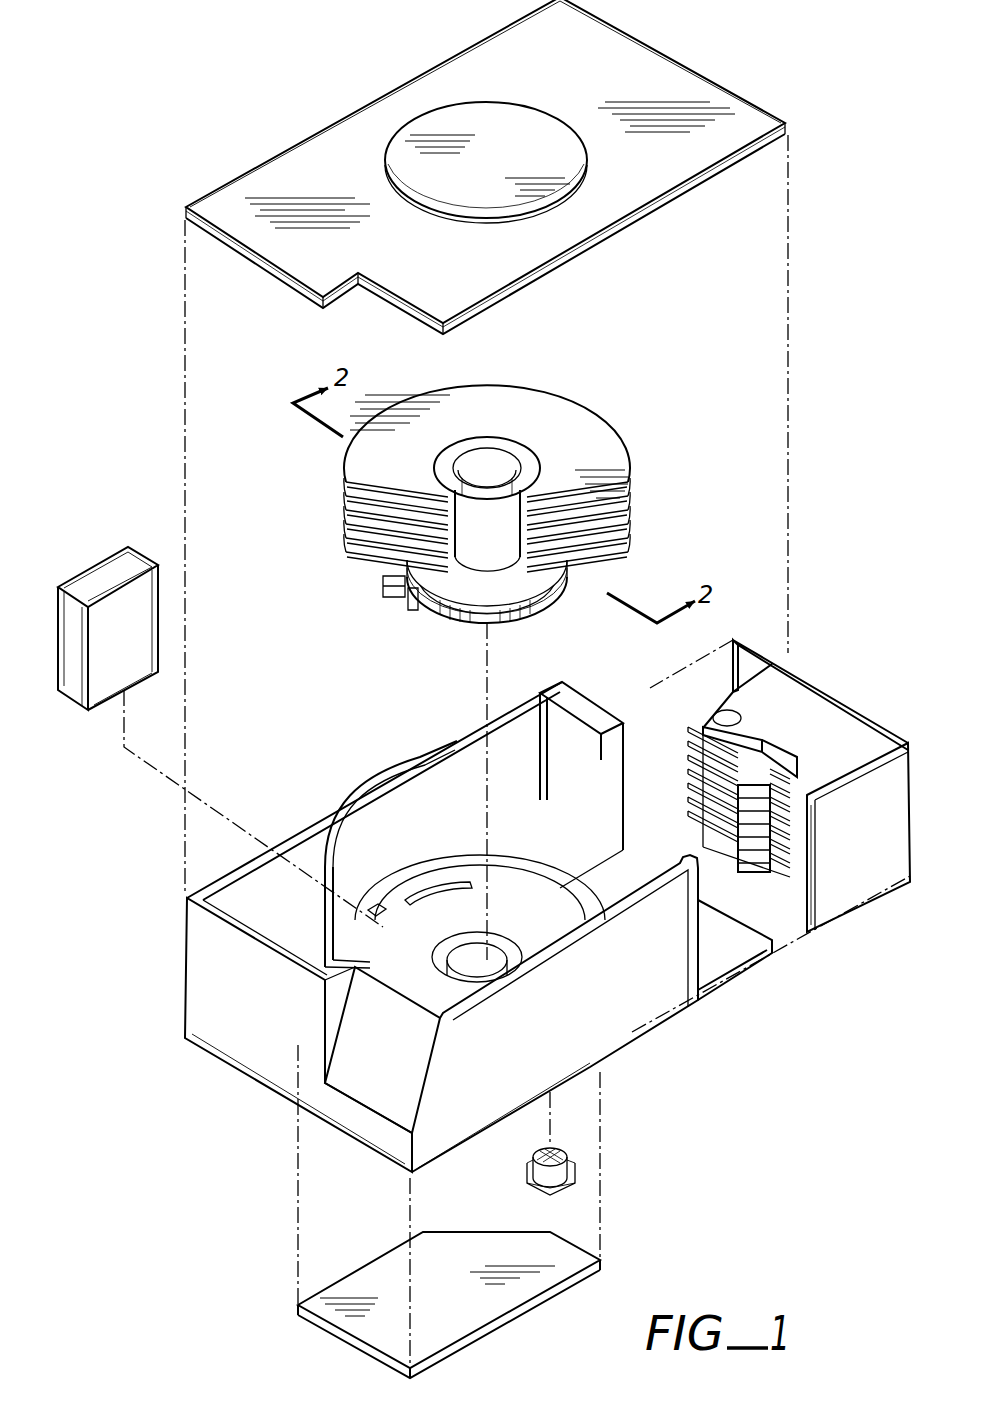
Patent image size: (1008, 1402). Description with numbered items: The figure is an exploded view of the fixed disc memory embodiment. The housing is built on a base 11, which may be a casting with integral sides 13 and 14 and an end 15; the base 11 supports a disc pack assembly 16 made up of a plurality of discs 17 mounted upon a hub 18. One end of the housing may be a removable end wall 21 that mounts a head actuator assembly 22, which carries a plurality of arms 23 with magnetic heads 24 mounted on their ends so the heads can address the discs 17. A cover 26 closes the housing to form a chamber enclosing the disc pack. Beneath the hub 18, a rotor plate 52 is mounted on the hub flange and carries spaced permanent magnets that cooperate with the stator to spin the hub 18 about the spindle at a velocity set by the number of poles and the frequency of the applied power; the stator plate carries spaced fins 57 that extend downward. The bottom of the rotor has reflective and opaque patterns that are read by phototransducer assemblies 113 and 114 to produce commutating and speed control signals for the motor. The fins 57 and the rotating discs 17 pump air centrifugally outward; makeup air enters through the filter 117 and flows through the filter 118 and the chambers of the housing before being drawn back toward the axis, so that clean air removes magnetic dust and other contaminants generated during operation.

The base 11 is at (722, 951).
The side 13 is at (355, 800).
The side 14 is at (634, 1027).
The end 15 is at (260, 1070).
The disc pack assembly 16 is at (508, 503).
The discs 17 is at (636, 460).
The hub 18 is at (506, 546).
The removable end wall 21 is at (850, 713).
The head actuator assembly 22 is at (690, 713).
The arms 23 is at (700, 762).
The magnetic heads 24 is at (756, 874).
The cover 26 is at (670, 197).
The rotor plate 52 is at (392, 600).
The fins 57 is at (415, 612).
The phototransducer assembly 113 is at (378, 905).
The phototransducer assembly 114 is at (443, 881).
The filter 117 is at (576, 1172).
The filter 118 is at (90, 567).